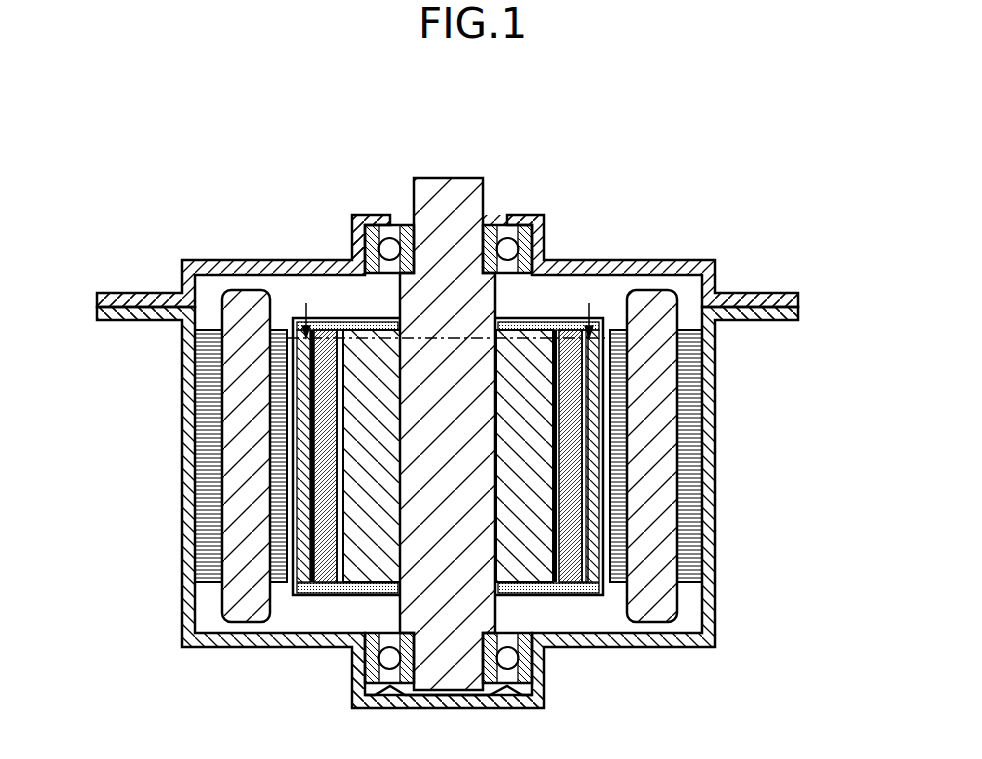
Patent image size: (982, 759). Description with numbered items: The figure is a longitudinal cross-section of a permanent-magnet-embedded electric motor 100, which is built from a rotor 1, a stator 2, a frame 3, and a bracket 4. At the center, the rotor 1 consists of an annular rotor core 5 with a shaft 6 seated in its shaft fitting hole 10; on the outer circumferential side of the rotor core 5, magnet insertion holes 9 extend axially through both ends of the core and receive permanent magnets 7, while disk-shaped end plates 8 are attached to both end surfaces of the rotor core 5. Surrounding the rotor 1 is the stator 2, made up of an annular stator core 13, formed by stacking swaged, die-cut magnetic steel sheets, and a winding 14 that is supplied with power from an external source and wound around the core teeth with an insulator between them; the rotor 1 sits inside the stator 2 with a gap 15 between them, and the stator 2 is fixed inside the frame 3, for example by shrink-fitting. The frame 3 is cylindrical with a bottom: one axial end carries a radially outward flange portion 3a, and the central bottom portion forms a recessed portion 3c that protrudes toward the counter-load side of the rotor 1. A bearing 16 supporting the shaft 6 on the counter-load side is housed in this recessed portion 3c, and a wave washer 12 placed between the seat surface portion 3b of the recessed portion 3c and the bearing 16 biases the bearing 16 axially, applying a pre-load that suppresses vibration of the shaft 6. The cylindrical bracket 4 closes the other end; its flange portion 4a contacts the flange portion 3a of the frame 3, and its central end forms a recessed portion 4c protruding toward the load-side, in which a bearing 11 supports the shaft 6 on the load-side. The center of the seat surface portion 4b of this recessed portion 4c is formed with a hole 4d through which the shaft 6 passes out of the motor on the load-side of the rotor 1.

The permanent-magnet-embedded electric motor 100 is at (578, 129).
The rotor 1 is at (596, 456).
The stator 2 is at (366, 456).
The frame 3 is at (480, 524).
The flange portion 3a is at (780, 320).
The seat surface portion 3b is at (392, 710).
The recessed portion 3c is at (352, 652).
The bracket 4 is at (471, 230).
The flange portion 4a is at (778, 300).
The seat surface portion 4b is at (366, 214).
The recessed portion 4c is at (352, 245).
The hole 4d is at (493, 213).
The rotor core 5 is at (590, 395).
The shaft 6 is at (557, 433).
The permanent magnets 7 is at (570, 480).
The end plates 8 is at (850, 327).
The magnet insertion holes 9 is at (587, 523).
The shaft fitting hole 10 is at (497, 558).
The bearing 11 is at (545, 247).
The wave washer 12 is at (540, 690).
The stator core 13 is at (245, 457).
The winding 14 is at (213, 488).
The gap 15 is at (293, 556).
The bearing 16 is at (532, 660).